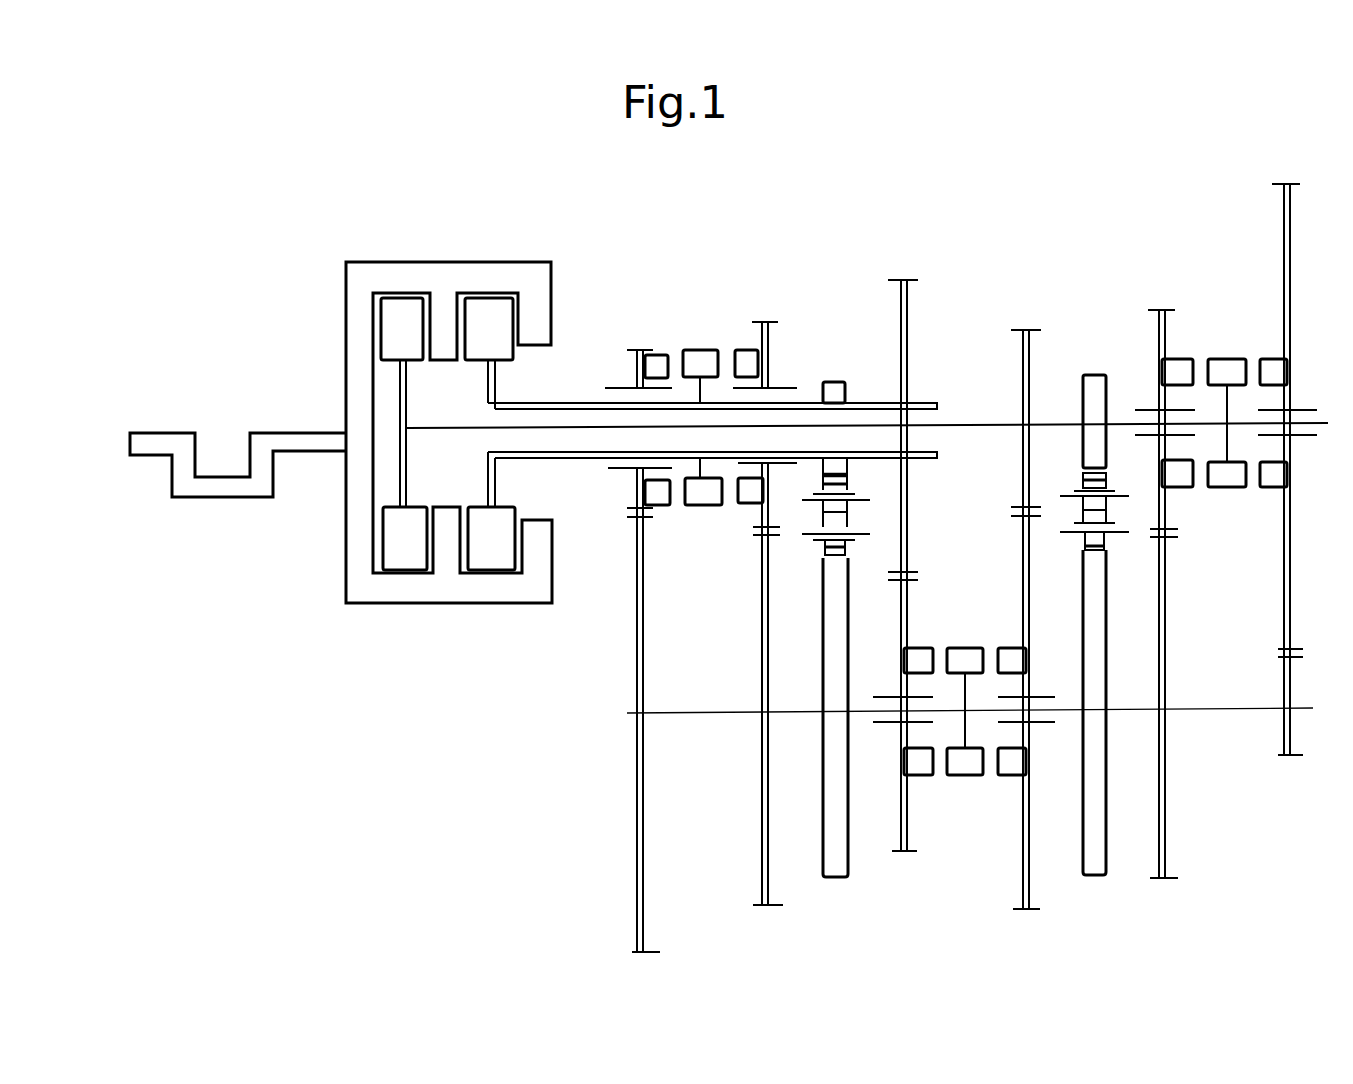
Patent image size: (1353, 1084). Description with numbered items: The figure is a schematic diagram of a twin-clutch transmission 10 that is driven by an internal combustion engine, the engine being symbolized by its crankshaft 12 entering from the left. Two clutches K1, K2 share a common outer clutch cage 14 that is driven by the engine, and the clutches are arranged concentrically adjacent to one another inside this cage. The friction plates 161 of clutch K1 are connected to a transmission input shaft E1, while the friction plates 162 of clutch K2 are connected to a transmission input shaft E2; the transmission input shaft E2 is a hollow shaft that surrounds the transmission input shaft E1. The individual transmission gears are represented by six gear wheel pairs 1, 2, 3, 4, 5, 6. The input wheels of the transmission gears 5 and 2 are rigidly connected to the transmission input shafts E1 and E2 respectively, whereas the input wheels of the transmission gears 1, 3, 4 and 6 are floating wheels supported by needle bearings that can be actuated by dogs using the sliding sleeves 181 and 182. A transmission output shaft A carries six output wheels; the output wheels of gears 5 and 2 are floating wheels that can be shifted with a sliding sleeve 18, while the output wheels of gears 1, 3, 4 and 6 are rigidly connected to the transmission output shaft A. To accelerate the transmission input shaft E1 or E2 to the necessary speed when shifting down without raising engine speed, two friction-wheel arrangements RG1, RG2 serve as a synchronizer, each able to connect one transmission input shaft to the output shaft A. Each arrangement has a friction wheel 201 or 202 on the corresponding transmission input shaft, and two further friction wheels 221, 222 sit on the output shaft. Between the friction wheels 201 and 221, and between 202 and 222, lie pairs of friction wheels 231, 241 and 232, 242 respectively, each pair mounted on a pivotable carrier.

The twin-clutch transmission 10 is at (972, 214).
The crankshaft 12 is at (233, 552).
The outer clutch cage 14 is at (436, 604).
The friction plates 161 is at (367, 491).
The friction plates 162 is at (503, 572).
The clutch K1 is at (367, 421).
The clutch K2 is at (512, 421).
The transmission input shaft E1 is at (578, 424).
The transmission input shaft E2 is at (595, 402).
The gear wheel pair 1 is at (638, 581).
The gear wheel pair 2 is at (1026, 586).
The gear wheel pair 3 is at (765, 558).
The gear wheel pair 4 is at (1165, 569).
The gear wheel pair 5 is at (903, 531).
The gear wheel pair 6 is at (1287, 444).
The sliding sleeve 18 is at (965, 765).
The sliding sleeve 181 is at (1220, 355).
The sliding sleeve 182 is at (698, 350).
The friction-wheel arrangement RG1 is at (1132, 633).
The friction-wheel arrangement RG2 is at (882, 635).
The friction wheel 201 is at (1094, 377).
The friction wheel 202 is at (838, 392).
The friction wheel 221 is at (1103, 845).
The friction wheel 222 is at (840, 841).
The friction wheel 231 is at (1094, 480).
The friction wheel 232 is at (835, 483).
The friction wheel 241 is at (1094, 545).
The friction wheel 242 is at (835, 547).
The transmission output shaft A is at (1313, 708).